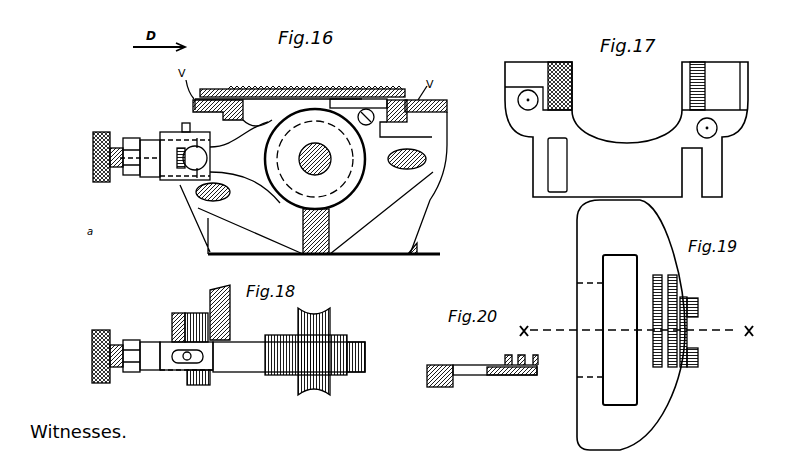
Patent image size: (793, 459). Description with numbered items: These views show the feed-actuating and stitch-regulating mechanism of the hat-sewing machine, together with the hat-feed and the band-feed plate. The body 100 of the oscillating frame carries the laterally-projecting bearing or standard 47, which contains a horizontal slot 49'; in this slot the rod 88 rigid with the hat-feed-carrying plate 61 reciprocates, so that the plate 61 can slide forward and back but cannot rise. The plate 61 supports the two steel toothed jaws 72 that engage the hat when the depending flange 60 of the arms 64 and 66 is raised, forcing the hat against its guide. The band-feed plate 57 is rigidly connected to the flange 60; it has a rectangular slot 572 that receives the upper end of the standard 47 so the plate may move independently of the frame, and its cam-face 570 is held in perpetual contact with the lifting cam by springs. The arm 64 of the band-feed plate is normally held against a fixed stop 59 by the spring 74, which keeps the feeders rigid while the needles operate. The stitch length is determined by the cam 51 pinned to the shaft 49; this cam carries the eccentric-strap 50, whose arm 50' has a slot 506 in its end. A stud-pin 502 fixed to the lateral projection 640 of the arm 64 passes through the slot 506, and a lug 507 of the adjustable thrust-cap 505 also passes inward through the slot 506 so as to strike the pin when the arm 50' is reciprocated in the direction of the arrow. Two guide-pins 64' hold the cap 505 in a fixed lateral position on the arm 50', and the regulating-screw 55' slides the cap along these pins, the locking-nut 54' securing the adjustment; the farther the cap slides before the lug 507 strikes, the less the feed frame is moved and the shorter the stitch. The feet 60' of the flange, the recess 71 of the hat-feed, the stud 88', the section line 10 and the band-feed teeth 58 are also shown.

In FIG. 16, the laterally-projecting bearing or standard 47 is at (400, 147).
In FIG. 16, the shaft 49 is at (305, 156).
In FIG. 18, the shaft 49 is at (332, 351).
In FIG. 16, the slot 49' is at (278, 205).
In FIG. 16, the eccentric-strap 50 is at (326, 159).
In FIG. 18, the eccentric-strap 50 is at (307, 357).
In FIG. 16, the arm of the eccentric-strap 50' is at (140, 171).
In FIG. 18, the arm of the eccentric-strap 50' is at (128, 335).
In FIG. 16, the stud-pin 502 is at (210, 157).
In FIG. 18, the stud-pin 502 is at (199, 385).
In FIG. 16, the adjustable thrust-cap 505 is at (177, 183).
In FIG. 18, the adjustable thrust-cap 505 is at (217, 372).
In FIG. 16, the slot 506 is at (160, 148).
In FIG. 16, the lug 507 is at (157, 148).
In FIG. 16, the cam 51 is at (335, 143).
In FIG. 18, the cam 51 is at (350, 340).
In FIG. 16, the locking-nut 54' is at (108, 175).
In FIG. 18, the locking-nut 54' is at (119, 373).
In FIG. 16, the regulating-screw 55' is at (75, 157).
In FIG. 18, the regulating-screw 55' is at (80, 356).
In FIG. 16, the band-feed plate 57 is at (440, 99).
In FIG. 19, the band-feed plate 57 is at (631, 325).
In FIG. 16, the cam-face 570 is at (300, 95).
In FIG. 20, the cam-face 570 is at (433, 387).
In FIG. 19, the rectangular slot 572 is at (620, 330).
In FIG. 20, the rectangular slot 572 is at (467, 370).
In FIG. 16, the rack 58 is at (325, 89).
In FIG. 19, the rack 58 is at (653, 275).
In FIG. 20, the rack 58 is at (535, 363).
In FIG. 16, the fixed stop 59 is at (383, 92).
In FIG. 16, the depending flange 60 is at (311, 236).
In FIG. 16, the frame foot 60' is at (315, 260).
In FIG. 17, the hat-feed-carrying plate 61 is at (626, 129).
In FIG. 16, the arm 64 is at (188, 108).
In FIG. 18, the arm 64 is at (234, 312).
In FIG. 16, the guide-pin 64' is at (158, 170).
In FIG. 18, the guide-pin 64' is at (154, 385).
In FIG. 18, the lateral projection 640 is at (172, 323).
In FIG. 16, the arm 66 is at (447, 108).
In FIG. 17, the bracket recess 71 is at (617, 145).
In FIG. 17, the toothed jaw 72 is at (560, 62).
In FIG. 16, the spring 74 is at (388, 123).
In FIG. 16, the rod 88 is at (335, 184).
In FIG. 18, the rod 88 is at (184, 394).
In FIG. 16, the pivot stud 88' is at (141, 202).
In FIG. 16, the body of the oscillating frame 100 is at (315, 257).
In FIG. 19, the section line 10 is at (641, 323).